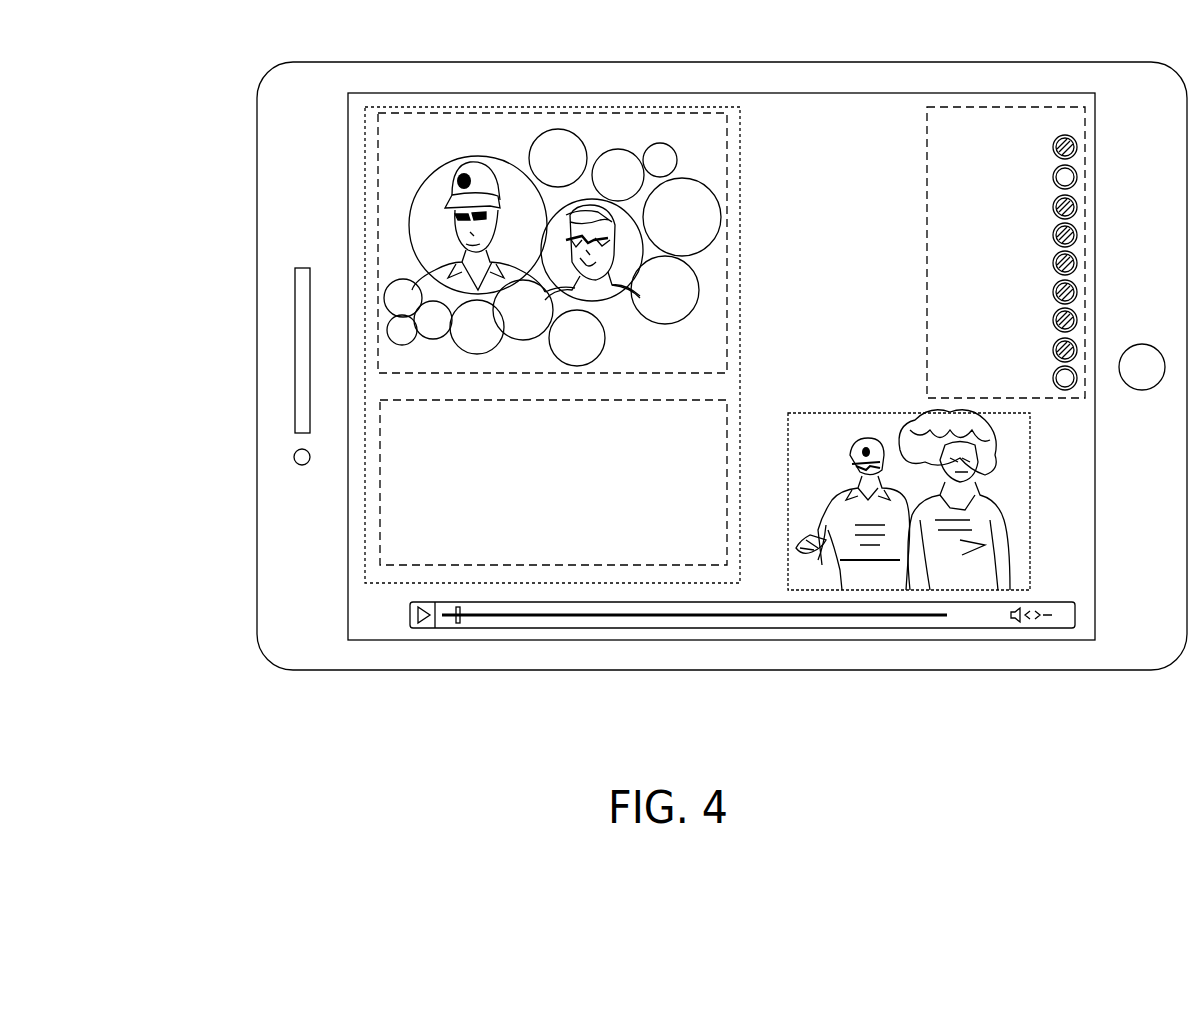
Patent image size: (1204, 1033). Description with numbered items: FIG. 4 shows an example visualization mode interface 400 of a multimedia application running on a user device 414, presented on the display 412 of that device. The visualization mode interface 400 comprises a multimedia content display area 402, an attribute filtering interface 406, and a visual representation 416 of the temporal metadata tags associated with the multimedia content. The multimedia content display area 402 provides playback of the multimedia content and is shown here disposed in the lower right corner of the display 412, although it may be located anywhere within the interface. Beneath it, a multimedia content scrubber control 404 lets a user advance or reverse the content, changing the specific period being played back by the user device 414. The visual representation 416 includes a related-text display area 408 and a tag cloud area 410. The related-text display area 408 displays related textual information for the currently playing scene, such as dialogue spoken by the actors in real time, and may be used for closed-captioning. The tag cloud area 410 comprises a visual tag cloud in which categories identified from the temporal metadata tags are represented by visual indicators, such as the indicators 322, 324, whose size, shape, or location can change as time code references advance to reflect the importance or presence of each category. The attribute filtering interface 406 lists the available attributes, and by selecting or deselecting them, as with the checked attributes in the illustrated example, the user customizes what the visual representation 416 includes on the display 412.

The visualization mode interface 400 is at (229, 69).
The multimedia content display area 402 is at (852, 413).
The multimedia content scrubber control 404 is at (497, 630).
The attribute filtering interface 406 is at (926, 172).
The related-text display area 408 is at (740, 402).
The tag cloud area 410 is at (398, 112).
The display 412 is at (1103, 143).
The user device 414 is at (253, 170).
The visual representation 416 is at (742, 140).
The character circle 322 is at (613, 297).
The content circle 324 is at (446, 350).